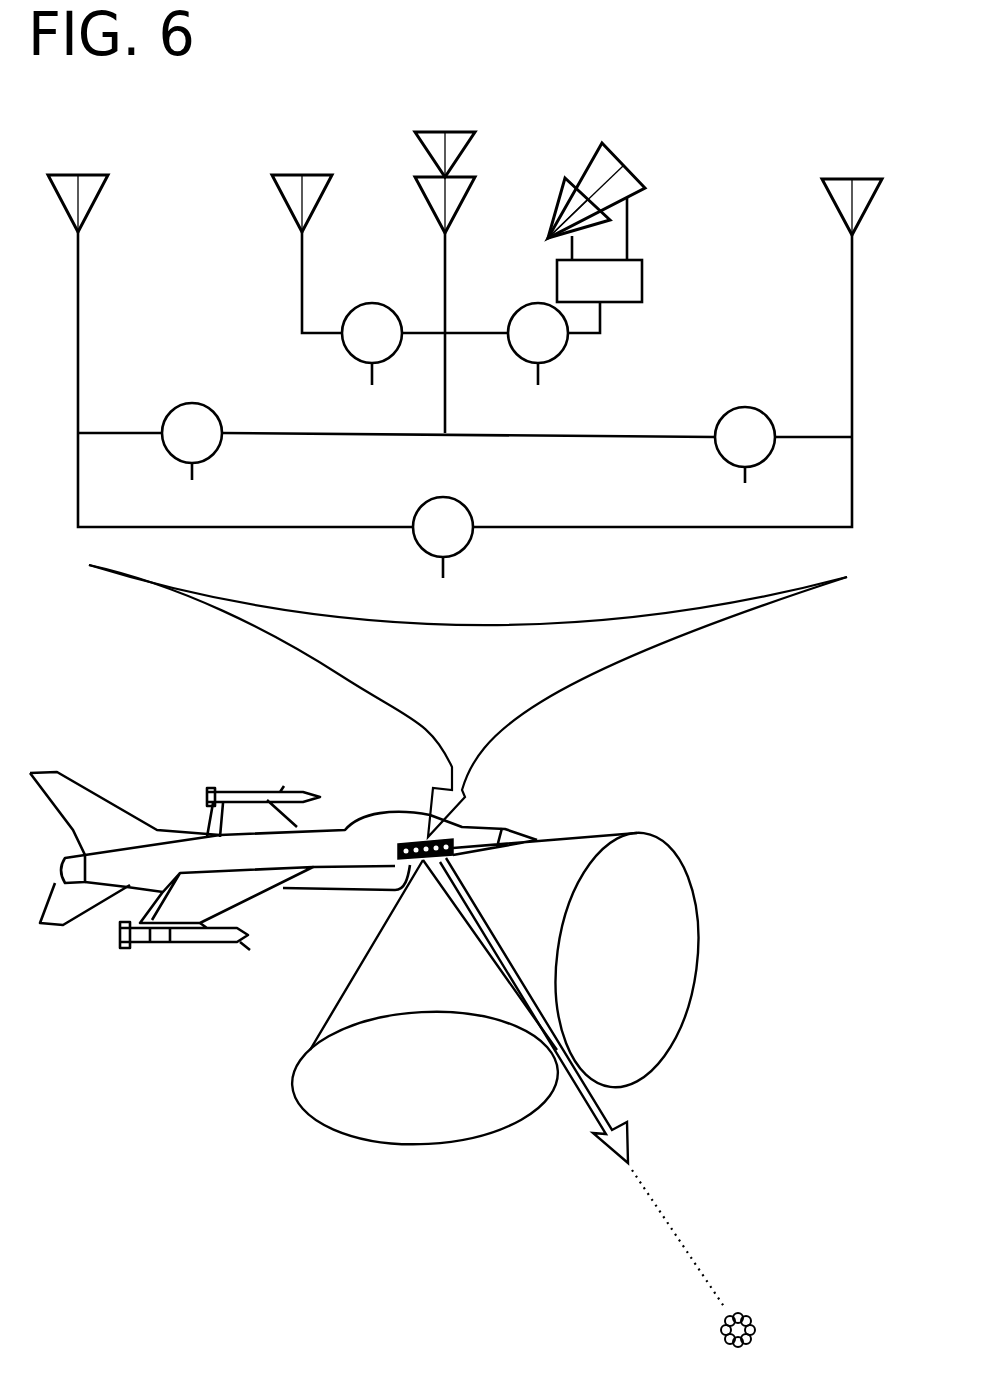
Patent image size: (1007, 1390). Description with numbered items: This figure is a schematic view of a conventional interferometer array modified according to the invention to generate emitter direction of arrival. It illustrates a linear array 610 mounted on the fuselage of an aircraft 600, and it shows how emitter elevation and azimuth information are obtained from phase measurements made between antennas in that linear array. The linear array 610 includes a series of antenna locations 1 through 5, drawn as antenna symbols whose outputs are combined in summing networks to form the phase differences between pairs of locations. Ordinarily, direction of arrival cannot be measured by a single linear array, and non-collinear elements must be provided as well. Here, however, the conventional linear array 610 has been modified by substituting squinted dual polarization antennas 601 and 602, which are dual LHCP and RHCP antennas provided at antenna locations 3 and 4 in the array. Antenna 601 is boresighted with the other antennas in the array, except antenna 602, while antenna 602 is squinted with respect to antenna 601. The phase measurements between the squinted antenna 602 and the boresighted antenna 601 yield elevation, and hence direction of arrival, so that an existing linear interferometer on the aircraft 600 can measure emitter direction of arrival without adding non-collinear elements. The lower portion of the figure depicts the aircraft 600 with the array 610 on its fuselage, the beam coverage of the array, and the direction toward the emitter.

The antenna location 1 is at (78, 187).
The antenna location 2 is at (302, 187).
The antenna location 3 is at (447, 177).
The antenna location 4 is at (471, 143).
The antenna location 5 is at (852, 190).
The dual polarization antenna 601 is at (413, 141).
The dual polarization antenna 602 is at (562, 205).
The linear array 610 is at (216, 287).
The aircraft 600 is at (495, 835).